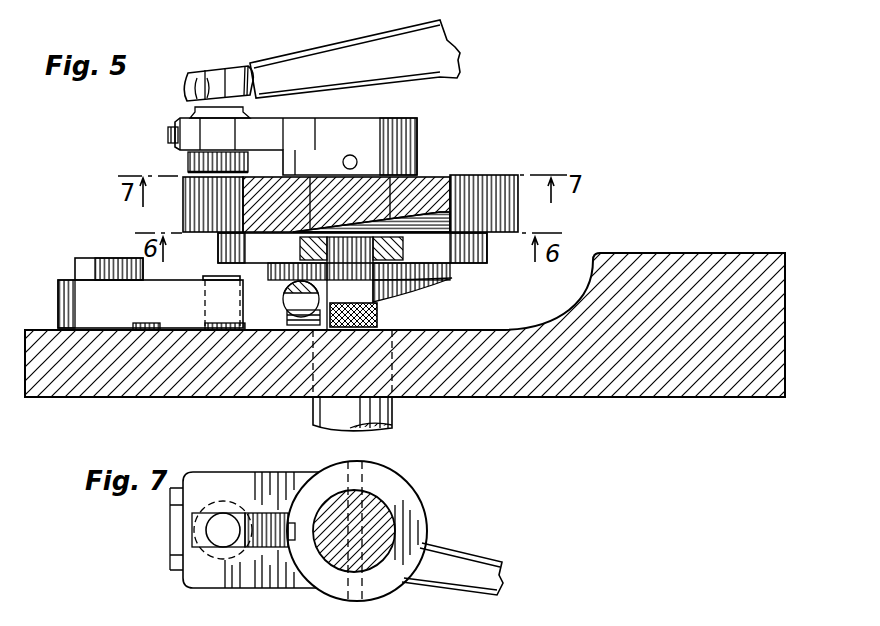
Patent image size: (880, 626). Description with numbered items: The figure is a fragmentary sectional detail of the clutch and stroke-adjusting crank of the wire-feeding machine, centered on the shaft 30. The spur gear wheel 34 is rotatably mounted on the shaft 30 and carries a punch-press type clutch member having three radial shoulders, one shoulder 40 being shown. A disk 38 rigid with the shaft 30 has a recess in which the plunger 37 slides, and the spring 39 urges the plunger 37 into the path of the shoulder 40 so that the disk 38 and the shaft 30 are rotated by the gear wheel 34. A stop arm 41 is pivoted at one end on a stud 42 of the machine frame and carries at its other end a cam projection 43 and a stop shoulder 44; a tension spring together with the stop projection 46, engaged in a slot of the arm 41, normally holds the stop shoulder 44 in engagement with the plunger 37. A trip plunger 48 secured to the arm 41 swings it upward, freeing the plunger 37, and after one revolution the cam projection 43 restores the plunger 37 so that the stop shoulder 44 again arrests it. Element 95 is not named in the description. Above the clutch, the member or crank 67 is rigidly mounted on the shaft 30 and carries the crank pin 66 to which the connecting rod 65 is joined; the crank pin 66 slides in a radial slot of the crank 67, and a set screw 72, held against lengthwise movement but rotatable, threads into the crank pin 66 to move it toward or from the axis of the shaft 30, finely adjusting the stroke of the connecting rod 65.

In FIG. 5, the shaft 30 is at (393, 415).
In FIG. 7, the shaft 30 is at (393, 518).
In FIG. 5, the spur gear wheel 34 is at (497, 175).
In FIG. 5, the plunger 37 is at (320, 283).
In FIG. 5, the disk 38 is at (470, 263).
In FIG. 5, the spring 39 is at (345, 322).
In FIG. 5, the shoulder 40 is at (453, 213).
In FIG. 5, the stop arm 41 is at (151, 305).
In FIG. 5, the stud 42 is at (130, 258).
In FIG. 5, the cam projection 43 is at (433, 293).
In FIG. 5, the stop shoulder 44 is at (347, 322).
In FIG. 5, the stop projection 46 is at (215, 276).
In FIG. 5, the plunger 48 is at (295, 285).
In FIG. 5, the washer 95 is at (287, 318).
In FIG. 5, the connecting rod 65 is at (373, 30).
In FIG. 7, the connecting rod 65 is at (468, 549).
In FIG. 5, the crank pin 66 is at (235, 55).
In FIG. 7, the crank pin 66 is at (223, 518).
In FIG. 5, the member or crank 67 is at (293, 118).
In FIG. 7, the member or crank 67 is at (323, 478).
In FIG. 5, the set screw 72 is at (169, 137).
In FIG. 7, the set screw 72 is at (263, 547).